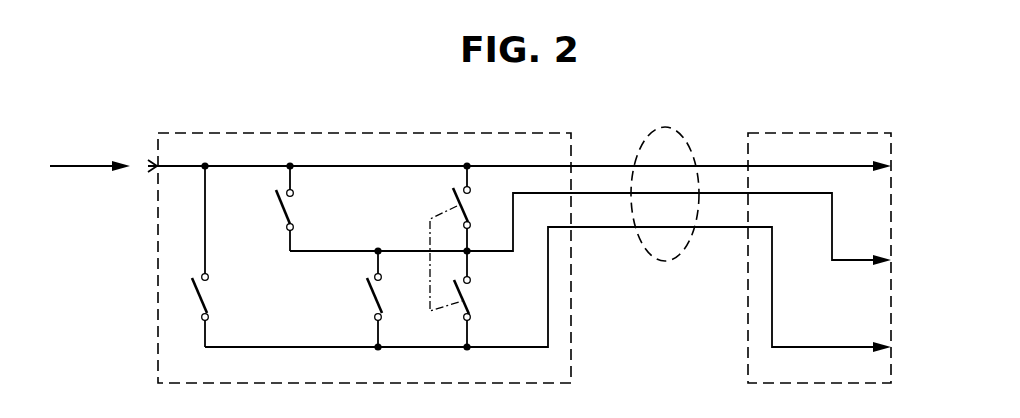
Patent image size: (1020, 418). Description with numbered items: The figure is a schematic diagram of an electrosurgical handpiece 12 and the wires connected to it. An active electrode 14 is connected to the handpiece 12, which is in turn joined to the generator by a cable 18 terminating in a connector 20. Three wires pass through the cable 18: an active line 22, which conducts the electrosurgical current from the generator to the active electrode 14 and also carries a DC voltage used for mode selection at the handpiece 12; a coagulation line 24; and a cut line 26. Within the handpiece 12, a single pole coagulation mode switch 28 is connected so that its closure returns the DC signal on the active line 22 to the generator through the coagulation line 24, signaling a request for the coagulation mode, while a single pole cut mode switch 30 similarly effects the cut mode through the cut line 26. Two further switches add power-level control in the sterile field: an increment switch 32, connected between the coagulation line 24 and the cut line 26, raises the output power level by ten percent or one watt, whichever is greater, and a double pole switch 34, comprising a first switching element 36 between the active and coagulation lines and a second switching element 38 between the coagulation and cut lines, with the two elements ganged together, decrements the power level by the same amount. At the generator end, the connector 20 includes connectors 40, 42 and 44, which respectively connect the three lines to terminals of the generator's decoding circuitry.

The handpiece 12 is at (403, 133).
The active electrode 14 is at (80, 162).
The cable 18 is at (685, 141).
The connector 20 is at (815, 133).
The active line 22 is at (602, 163).
The coagulation line 24 is at (603, 194).
The cut line 26 is at (722, 228).
The coagulation mode switch 28 is at (278, 203).
The cut mode switch 30 is at (209, 297).
The increment switch 32 is at (366, 301).
The double pole switch 34 is at (476, 208).
The first switching element 36 is at (455, 205).
The second switching element 38 is at (470, 298).
The connector 40 is at (880, 165).
The connector 42 is at (880, 258).
The connector 44 is at (880, 346).